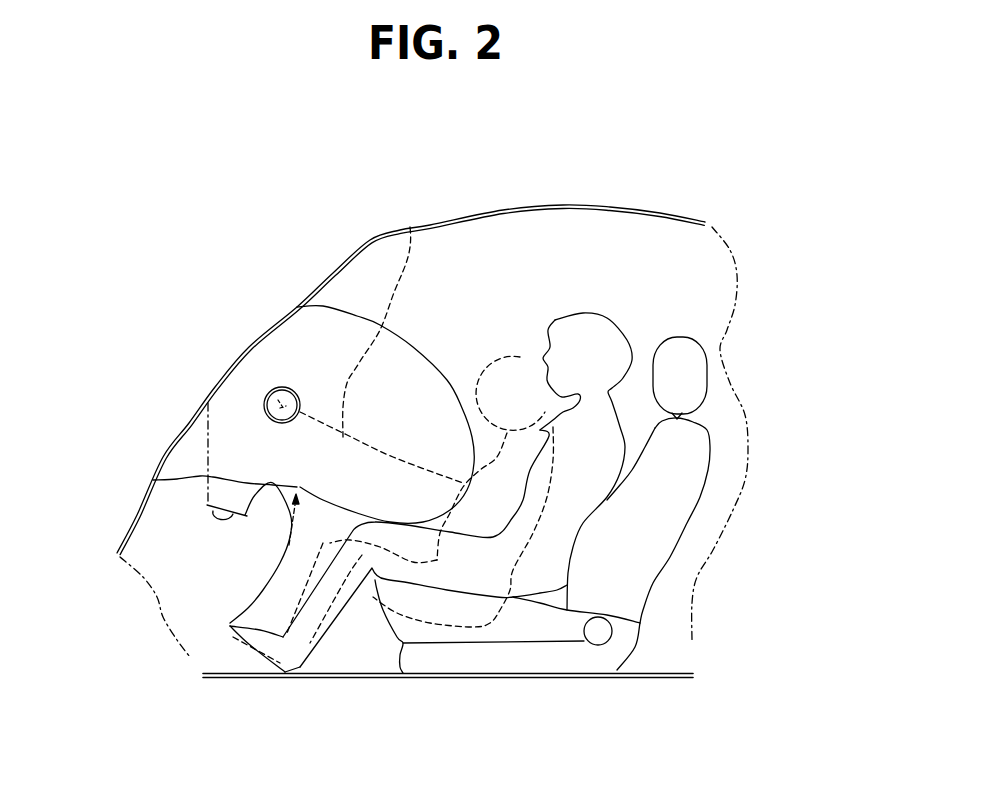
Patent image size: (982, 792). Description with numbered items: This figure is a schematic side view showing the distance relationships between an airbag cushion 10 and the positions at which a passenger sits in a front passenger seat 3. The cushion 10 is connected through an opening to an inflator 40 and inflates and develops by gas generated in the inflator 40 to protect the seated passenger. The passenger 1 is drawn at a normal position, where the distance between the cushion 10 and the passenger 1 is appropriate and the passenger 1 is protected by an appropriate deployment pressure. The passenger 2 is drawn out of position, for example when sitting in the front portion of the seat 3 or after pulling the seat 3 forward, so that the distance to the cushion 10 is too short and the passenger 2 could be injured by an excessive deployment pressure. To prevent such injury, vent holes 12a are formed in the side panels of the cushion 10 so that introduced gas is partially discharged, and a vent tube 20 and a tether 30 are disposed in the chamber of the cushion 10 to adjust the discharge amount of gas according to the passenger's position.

The passenger 1 is at (587, 311).
The passenger 2 is at (505, 352).
The front passenger seat 3 is at (663, 507).
The cushion 10 is at (280, 550).
The vent hole 12a is at (265, 410).
The vent tube 20 is at (279, 387).
The tether 30 is at (410, 227).
The inflator 40 is at (222, 520).